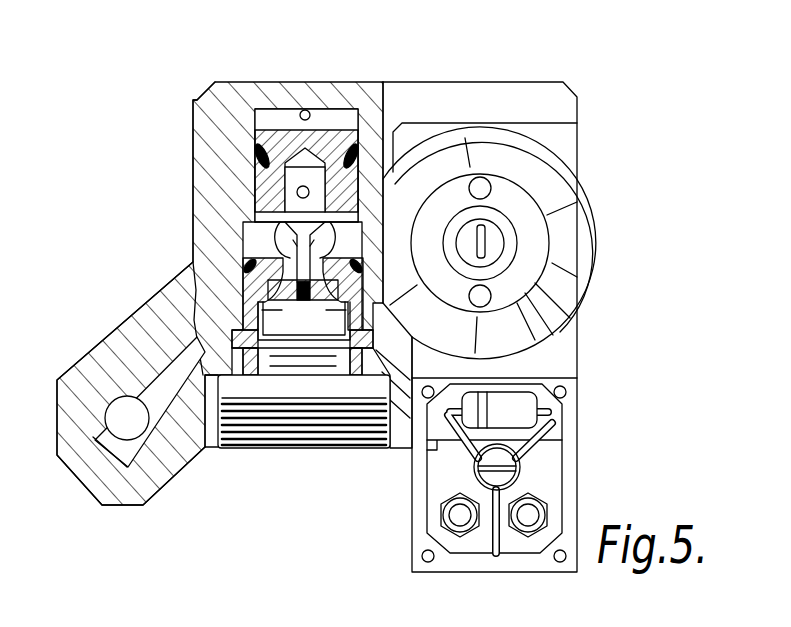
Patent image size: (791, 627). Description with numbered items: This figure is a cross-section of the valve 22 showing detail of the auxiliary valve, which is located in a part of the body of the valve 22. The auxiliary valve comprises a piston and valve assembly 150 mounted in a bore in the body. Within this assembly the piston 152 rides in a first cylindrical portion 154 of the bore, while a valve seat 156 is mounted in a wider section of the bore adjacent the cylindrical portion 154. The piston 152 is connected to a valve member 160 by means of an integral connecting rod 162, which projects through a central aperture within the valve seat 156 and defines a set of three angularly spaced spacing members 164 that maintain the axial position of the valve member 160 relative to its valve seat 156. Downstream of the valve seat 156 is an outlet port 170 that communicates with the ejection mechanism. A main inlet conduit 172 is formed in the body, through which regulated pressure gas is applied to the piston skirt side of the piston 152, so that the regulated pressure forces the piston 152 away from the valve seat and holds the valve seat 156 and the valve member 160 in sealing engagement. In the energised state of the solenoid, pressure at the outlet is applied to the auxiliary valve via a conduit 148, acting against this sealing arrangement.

The valve 22 is at (597, 137).
The conduit 148 is at (305, 110).
The piston and valve assembly 150 is at (250, 182).
The piston 152 is at (260, 147).
The first cylindrical portion 154 is at (350, 190).
The valve seat 156 is at (300, 242).
The valve member 160 is at (243, 305).
The connecting rod 162 is at (262, 218).
The spacing members 164 is at (272, 312).
The outlet port 170 is at (285, 416).
The main inlet conduit 172 is at (120, 412).